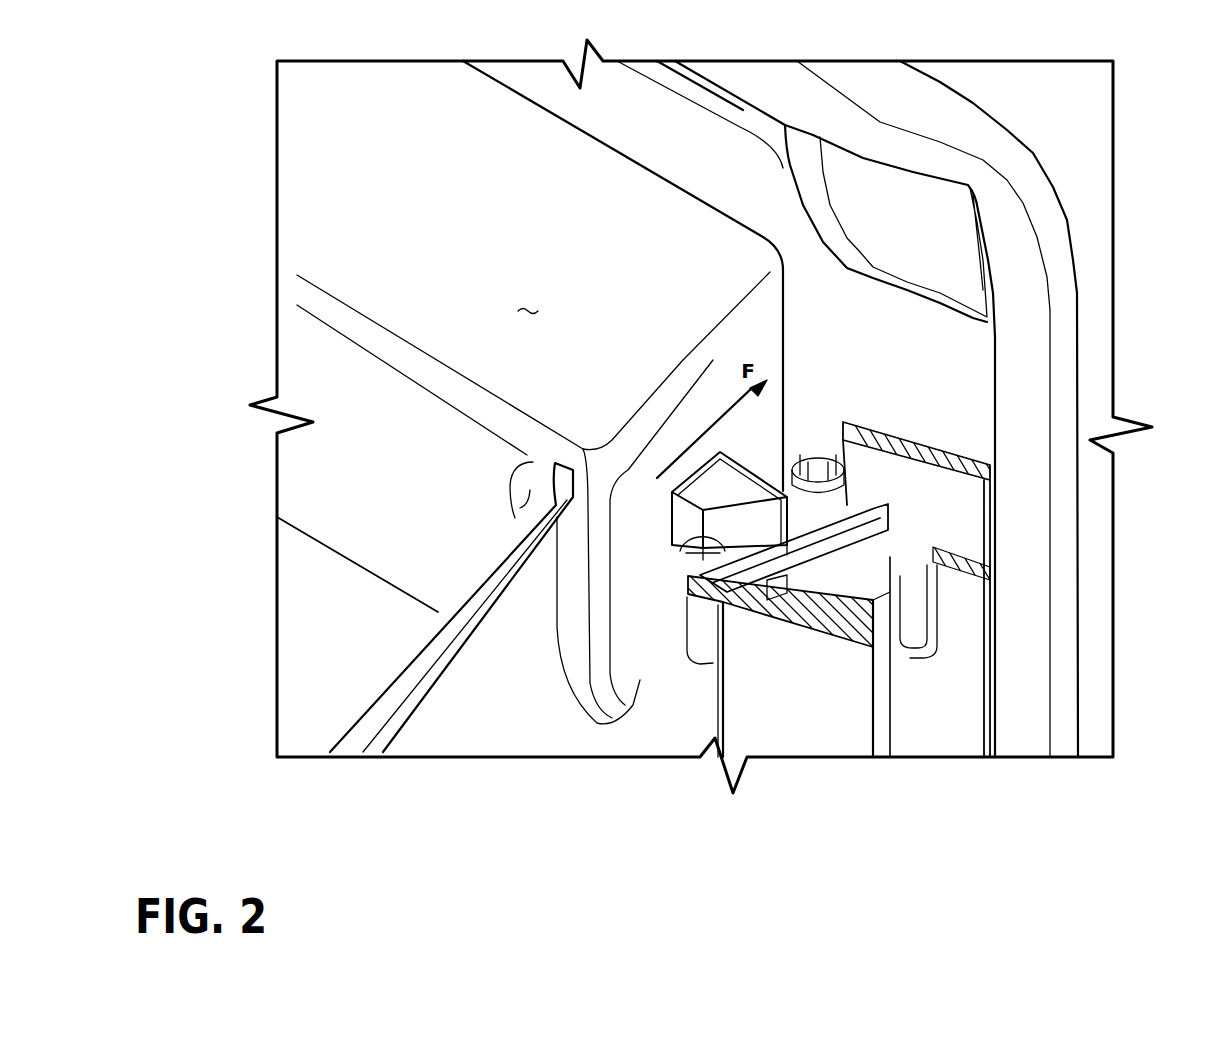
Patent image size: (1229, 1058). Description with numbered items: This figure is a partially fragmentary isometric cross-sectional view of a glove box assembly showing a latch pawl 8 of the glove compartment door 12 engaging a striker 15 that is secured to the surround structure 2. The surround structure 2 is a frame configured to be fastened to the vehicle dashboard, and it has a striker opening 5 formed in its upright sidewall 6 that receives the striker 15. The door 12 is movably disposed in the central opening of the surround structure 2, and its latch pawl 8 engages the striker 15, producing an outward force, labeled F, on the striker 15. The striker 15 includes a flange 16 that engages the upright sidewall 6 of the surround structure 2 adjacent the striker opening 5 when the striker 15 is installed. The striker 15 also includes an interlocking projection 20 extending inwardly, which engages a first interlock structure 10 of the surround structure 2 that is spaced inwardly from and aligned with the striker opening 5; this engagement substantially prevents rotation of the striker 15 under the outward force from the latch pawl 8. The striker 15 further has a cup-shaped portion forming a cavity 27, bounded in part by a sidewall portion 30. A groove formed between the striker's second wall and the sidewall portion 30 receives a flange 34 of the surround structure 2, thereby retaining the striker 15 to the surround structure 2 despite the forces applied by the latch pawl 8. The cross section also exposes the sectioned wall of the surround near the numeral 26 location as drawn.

The surround structure 2 is at (942, 448).
The striker opening 5 is at (815, 522).
The upright sidewall 6 is at (840, 518).
The latch pawl 8 is at (733, 470).
The first interlock structure 10 is at (807, 703).
The glove compartment door 12 is at (677, 409).
The striker 15 is at (718, 657).
The flange 16 is at (713, 660).
The interlocking projection 20 is at (915, 587).
The mounting plate 26 is at (883, 427).
The cavity 27 is at (847, 500).
The sidewall portion 30 is at (678, 556).
The flange 34 is at (682, 553).